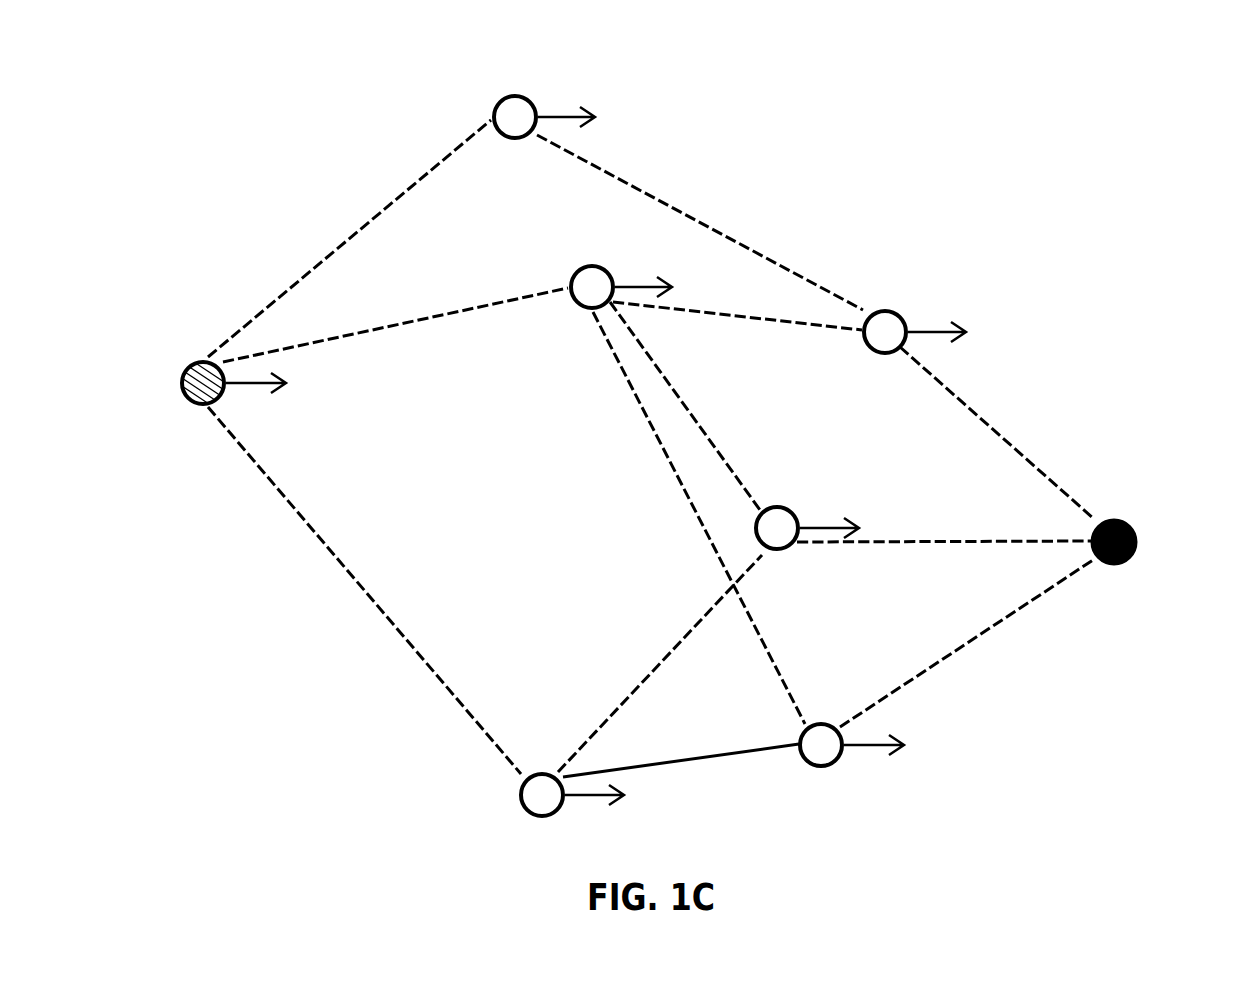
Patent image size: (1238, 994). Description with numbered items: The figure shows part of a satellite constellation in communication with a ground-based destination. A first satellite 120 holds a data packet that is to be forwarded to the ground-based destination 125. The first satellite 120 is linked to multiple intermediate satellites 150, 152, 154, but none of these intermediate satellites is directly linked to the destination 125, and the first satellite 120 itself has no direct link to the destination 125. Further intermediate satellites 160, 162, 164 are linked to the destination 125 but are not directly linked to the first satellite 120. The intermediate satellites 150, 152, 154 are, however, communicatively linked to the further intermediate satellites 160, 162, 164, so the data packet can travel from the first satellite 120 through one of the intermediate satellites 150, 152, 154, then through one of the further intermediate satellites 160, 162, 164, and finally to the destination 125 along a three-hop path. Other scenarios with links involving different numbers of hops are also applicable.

The first satellite 120 is at (186, 364).
The ground-based destination 125 is at (1126, 519).
The intermediate satellite 150 is at (530, 97).
The intermediate satellite 152 is at (574, 270).
The intermediate satellite 154 is at (537, 773).
The further intermediate satellite 160 is at (897, 311).
The further intermediate satellite 162 is at (789, 506).
The further intermediate satellite 164 is at (829, 723).